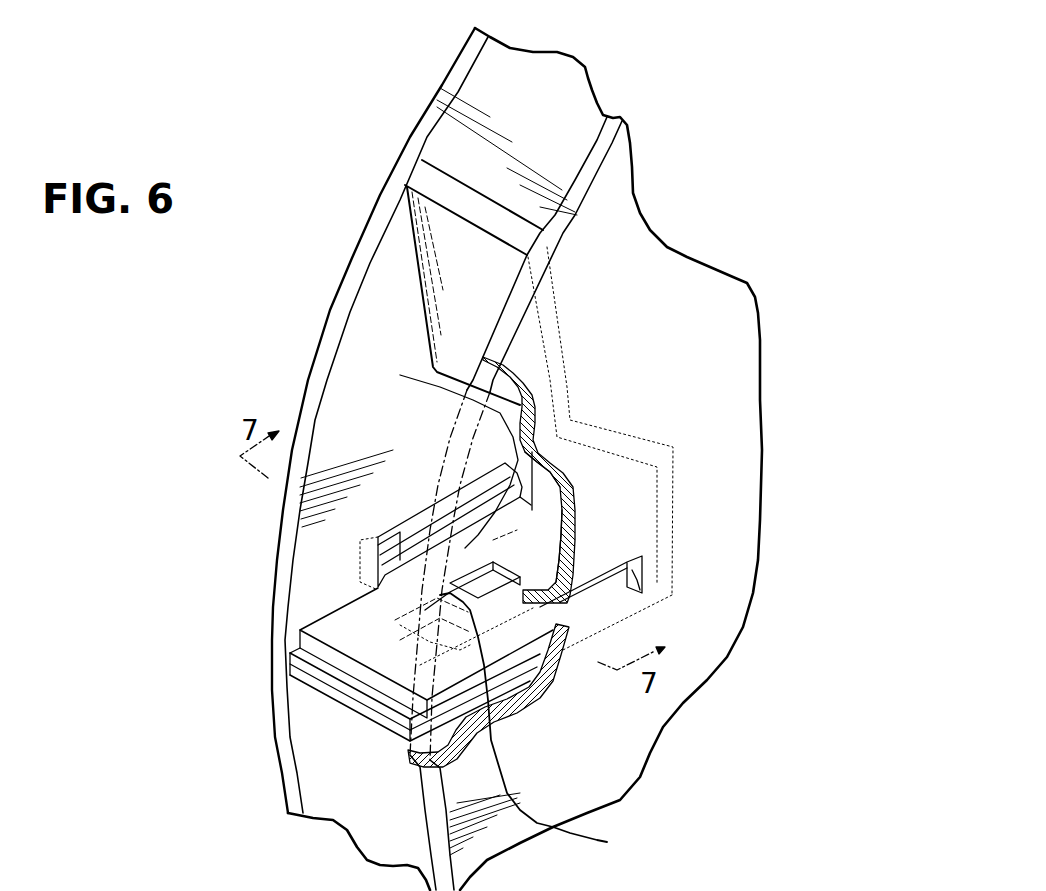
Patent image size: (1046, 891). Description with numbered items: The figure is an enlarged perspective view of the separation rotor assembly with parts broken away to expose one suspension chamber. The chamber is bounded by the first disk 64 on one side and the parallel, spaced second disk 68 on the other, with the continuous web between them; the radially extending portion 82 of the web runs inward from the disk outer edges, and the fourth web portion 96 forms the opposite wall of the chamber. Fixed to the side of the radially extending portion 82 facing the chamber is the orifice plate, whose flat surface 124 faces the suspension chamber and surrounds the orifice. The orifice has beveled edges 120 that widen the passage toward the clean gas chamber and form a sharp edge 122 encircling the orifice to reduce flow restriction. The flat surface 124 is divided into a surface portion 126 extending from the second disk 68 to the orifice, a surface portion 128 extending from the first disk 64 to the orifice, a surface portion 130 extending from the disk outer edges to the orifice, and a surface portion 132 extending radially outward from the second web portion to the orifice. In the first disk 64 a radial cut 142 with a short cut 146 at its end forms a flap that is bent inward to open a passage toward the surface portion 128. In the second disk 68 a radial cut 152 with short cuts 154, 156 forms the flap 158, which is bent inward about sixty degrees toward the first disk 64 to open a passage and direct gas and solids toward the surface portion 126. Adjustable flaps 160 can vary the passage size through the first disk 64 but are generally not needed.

The first disk 64 is at (562, 459).
The second disk 68 is at (360, 420).
The fourth web portion 96 is at (436, 246).
The radially extending portion 82 is at (509, 503).
The beveled edges 120 is at (543, 724).
The sharp edge 122 is at (373, 710).
The flat surface 124 is at (372, 624).
The surface portion 126 is at (686, 481).
The surface portion 128 is at (580, 699).
The surface portion 130 is at (371, 694).
The surface portion 132 is at (680, 546).
The radial cut 142 is at (625, 630).
The short cut 146 is at (674, 592).
The radial cut 152 is at (429, 487).
The short cut 154 is at (285, 569).
The short cut 156 is at (417, 472).
The flap 158 is at (600, 666).
The adjustable flaps 160 is at (299, 532).